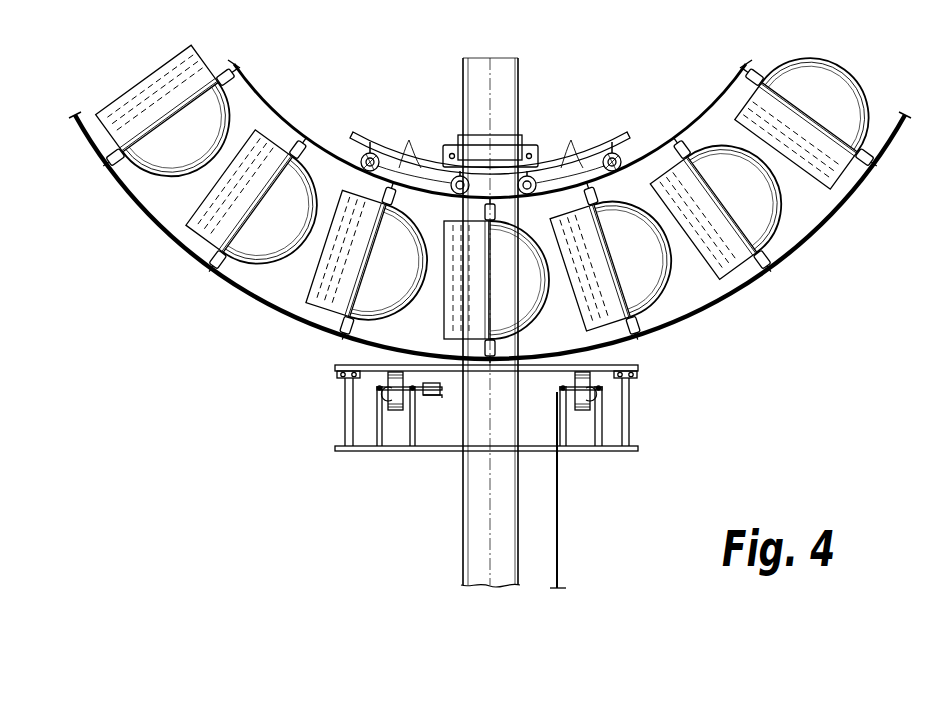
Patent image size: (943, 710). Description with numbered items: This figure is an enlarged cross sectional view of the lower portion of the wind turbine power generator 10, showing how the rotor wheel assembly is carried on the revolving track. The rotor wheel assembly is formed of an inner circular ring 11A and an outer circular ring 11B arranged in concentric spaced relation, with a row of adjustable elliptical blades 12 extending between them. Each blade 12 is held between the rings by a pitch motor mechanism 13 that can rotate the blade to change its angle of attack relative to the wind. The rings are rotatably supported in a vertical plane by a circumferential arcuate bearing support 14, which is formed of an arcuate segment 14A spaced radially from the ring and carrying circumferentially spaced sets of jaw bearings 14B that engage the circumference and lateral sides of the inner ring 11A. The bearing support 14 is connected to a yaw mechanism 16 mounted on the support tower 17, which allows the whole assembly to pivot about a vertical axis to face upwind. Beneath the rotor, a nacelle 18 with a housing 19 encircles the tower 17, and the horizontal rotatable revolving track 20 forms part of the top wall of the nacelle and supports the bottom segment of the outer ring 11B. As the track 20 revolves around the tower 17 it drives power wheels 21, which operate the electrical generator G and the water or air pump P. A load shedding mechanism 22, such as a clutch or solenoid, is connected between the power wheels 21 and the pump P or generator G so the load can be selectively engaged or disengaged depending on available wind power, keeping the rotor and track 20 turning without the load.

The wind turbine power generator 10 is at (182, 372).
The inner circular ring 11A is at (258, 94).
The outer circular ring 11B is at (152, 228).
The adjustable elliptical blades 12 is at (188, 142).
The pitch motor mechanism 13 is at (116, 166).
The circumferential arcuate bearing support 14 is at (370, 136).
The arcuate segment 14A is at (614, 142).
The jaw bearings 14B is at (414, 157).
The yaw mechanism 16 is at (508, 134).
The support tower 17 is at (463, 533).
The nacelle 18 is at (500, 434).
The housing 19 is at (629, 421).
The horizontal rotatable revolving track 20 is at (640, 368).
The power wheels 21 is at (380, 409).
The load shedding mechanism 22 is at (385, 397).
The electrical generator G is at (437, 400).
The pump P is at (558, 541).